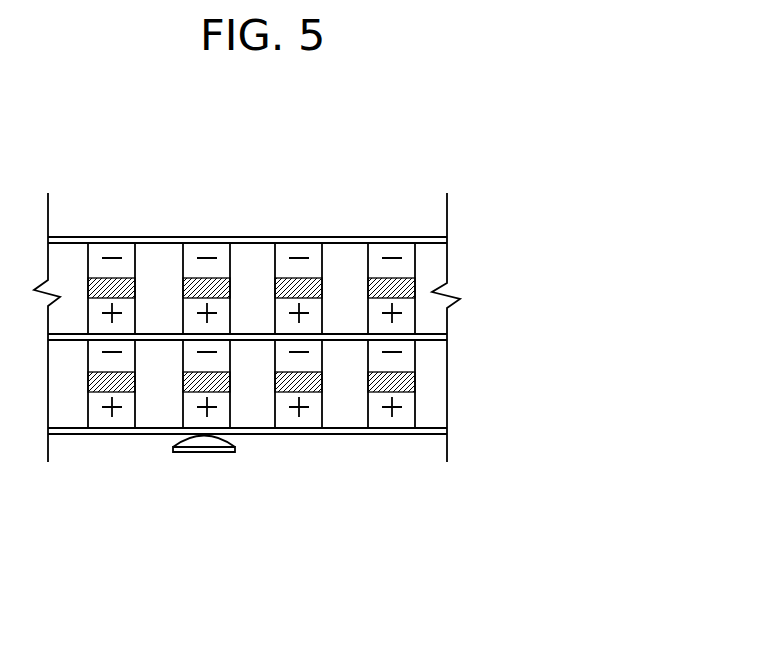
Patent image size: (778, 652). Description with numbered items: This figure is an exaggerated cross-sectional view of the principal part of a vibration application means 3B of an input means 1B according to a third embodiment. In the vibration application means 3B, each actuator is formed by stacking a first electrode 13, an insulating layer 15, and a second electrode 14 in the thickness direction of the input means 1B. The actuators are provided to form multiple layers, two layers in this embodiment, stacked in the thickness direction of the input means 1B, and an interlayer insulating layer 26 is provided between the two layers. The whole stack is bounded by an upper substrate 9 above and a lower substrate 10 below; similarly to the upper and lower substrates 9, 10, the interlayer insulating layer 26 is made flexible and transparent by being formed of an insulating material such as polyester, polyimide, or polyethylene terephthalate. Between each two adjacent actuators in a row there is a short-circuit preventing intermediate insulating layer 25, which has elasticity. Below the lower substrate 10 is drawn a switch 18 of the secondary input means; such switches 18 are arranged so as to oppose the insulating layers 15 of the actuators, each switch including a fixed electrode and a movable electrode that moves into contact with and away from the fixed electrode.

The input means 1B is at (170, 213).
The vibration application means 3B is at (338, 237).
The upper substrate 9 is at (430, 242).
The lower substrate 10 is at (427, 430).
The interlayer insulating layer 26 is at (447, 336).
The second electrode 14 is at (412, 260).
The insulating layer 15 is at (416, 278).
The first electrode 13 is at (412, 314).
The short-circuit preventing intermediate insulating layer 25 is at (348, 320).
The switch 18 is at (203, 453).